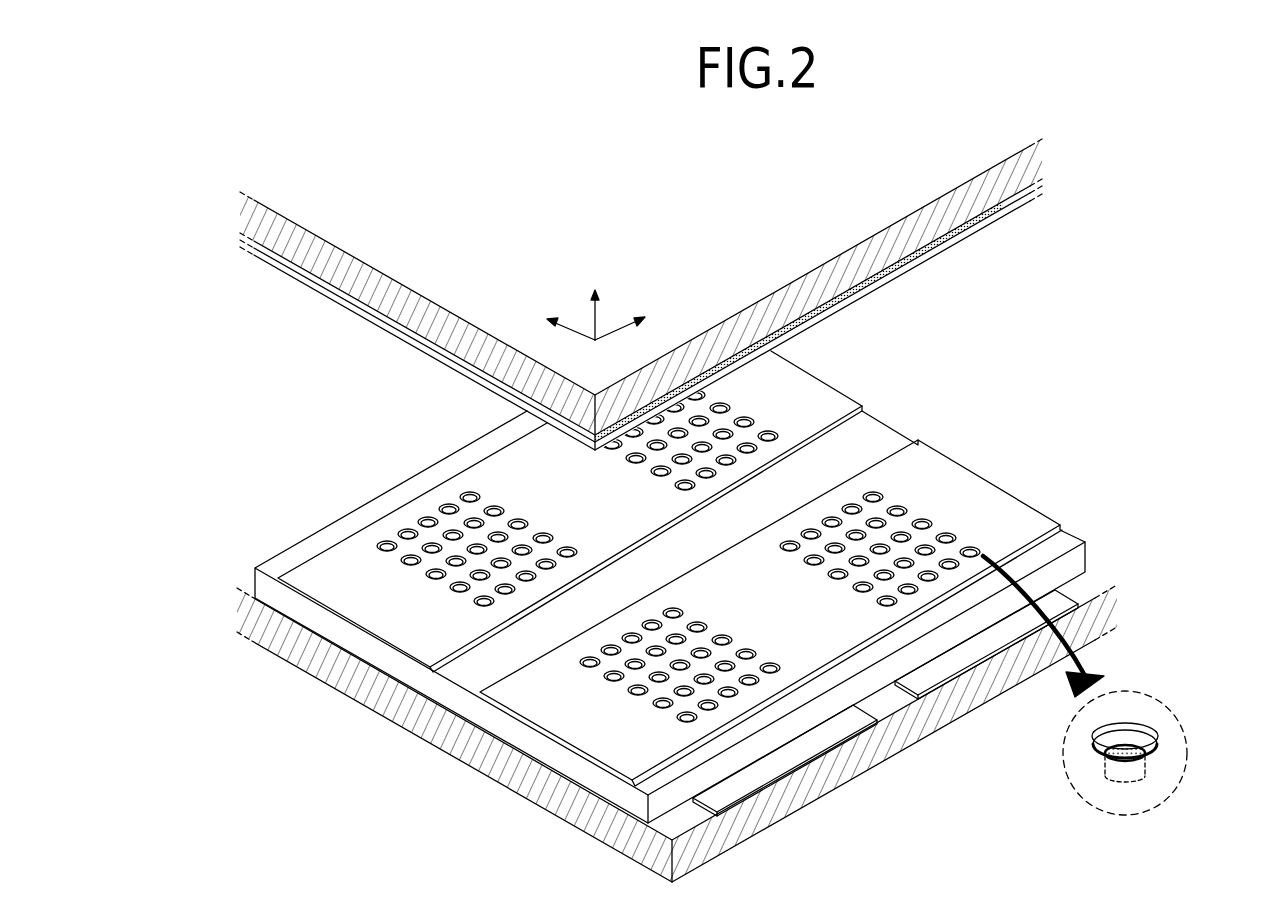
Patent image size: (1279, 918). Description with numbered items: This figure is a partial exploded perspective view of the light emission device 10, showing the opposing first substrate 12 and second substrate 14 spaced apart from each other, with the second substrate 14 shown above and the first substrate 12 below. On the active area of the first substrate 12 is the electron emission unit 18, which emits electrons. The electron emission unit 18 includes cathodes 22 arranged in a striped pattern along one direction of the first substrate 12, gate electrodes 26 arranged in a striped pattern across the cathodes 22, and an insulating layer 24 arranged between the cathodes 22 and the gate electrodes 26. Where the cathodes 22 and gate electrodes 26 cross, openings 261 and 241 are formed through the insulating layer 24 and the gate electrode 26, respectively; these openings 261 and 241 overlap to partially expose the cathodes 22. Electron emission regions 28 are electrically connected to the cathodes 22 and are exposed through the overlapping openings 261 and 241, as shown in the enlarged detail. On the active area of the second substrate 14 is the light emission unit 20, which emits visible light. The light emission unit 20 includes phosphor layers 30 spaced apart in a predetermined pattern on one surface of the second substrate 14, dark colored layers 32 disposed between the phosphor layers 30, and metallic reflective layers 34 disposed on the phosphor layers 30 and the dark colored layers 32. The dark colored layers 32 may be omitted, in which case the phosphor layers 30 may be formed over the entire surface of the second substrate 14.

The light emission device 10 is at (708, 201).
The first substrate 12 is at (592, 826).
The second substrate 14 is at (315, 258).
The electron emission unit 18 is at (695, 587).
The light emission unit 20 is at (650, 318).
The cathodes 22 is at (877, 715).
The insulating layer 24 is at (1073, 564).
The gate electrodes 26 is at (518, 695).
The electron emission regions 28 is at (1143, 758).
The phosphor layers 30 is at (952, 248).
The dark colored layers 32 is at (823, 312).
The metallic reflective layers 34 is at (1005, 210).
The opening of the gate electrode 241 is at (1133, 740).
The opening of the insulating layer 261 is at (1123, 730).